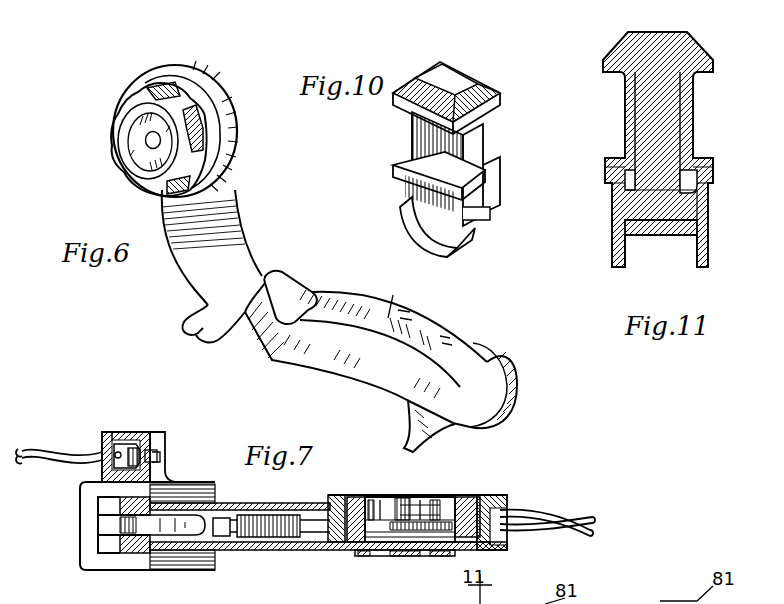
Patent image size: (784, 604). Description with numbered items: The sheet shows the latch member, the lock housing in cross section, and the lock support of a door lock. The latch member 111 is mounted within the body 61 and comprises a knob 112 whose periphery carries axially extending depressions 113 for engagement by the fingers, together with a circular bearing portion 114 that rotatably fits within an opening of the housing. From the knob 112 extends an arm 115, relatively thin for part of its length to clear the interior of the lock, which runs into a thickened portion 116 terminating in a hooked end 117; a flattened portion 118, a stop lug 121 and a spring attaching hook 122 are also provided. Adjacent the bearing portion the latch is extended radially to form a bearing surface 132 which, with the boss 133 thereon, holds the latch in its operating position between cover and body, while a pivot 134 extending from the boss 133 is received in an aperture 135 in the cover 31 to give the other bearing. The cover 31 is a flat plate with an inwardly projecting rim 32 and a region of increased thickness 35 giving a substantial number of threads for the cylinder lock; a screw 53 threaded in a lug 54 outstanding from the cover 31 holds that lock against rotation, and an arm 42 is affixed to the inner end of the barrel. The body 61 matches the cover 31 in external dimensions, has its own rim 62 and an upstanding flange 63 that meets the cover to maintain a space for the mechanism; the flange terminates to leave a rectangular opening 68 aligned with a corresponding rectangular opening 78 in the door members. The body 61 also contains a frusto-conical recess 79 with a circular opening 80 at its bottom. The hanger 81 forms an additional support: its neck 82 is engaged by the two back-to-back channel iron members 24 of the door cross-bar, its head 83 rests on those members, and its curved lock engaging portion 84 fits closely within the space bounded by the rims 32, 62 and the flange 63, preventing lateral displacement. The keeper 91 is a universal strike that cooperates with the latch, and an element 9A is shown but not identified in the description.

In FIG. 6, the axially extending depressions 113 is at (128, 118).
In FIG. 7, the axially extending depressions 113 is at (438, 520).
In FIG. 6, the circular bearing portion 114 is at (200, 118).
In FIG. 7, the circular bearing portion 114 is at (420, 505).
In FIG. 6, the bearing surface 132 is at (226, 134).
In FIG. 6, the knob 112 is at (126, 180).
In FIG. 7, the knob 112 is at (405, 500).
In FIG. 6, the arm 115 is at (240, 208).
In FIG. 6, the latch member 111 is at (276, 236).
In FIG. 6, the thickened portion 116 is at (353, 312).
In FIG. 6, the flattened portion 118 is at (428, 355).
In FIG. 6, the hooked end 117 is at (480, 383).
In FIG. 6, the spring attaching hook 122 is at (206, 346).
In FIG. 6, the stop lug 121 is at (410, 422).
In FIG. 10, the head 83 is at (470, 100).
In FIG. 11, the head 83 is at (618, 54).
In FIG. 10, the neck 82 is at (475, 150).
In FIG. 11, the neck 82 is at (672, 138).
In FIG. 10, the hanger 81 is at (516, 186).
In FIG. 10, the lock engaging portion 84 is at (452, 248).
In FIG. 11, the lock engaging portion 84 is at (640, 204).
In FIG. 11, the channel iron members 24 is at (627, 112).
In FIG. 11, the rim 62 is at (700, 188).
In FIG. 7, the rim 62 is at (510, 512).
In FIG. 11, the body 61 is at (712, 205).
In FIG. 7, the body 61 is at (496, 499).
In FIG. 11, the rim 32 is at (624, 184).
In FIG. 7, the rim 32 is at (508, 544).
In FIG. 11, the flange 63 is at (668, 228).
In FIG. 7, the flange 63 is at (515, 524).
In FIG. 11, the cover 31 is at (614, 250).
In FIG. 7, the cover 31 is at (496, 554).
In FIG. 7, the keeper 91 is at (90, 498).
In FIG. 7, the terminal block 9A is at (160, 458).
In FIG. 7, the rectangular opening 68 is at (155, 510).
In FIG. 7, the rectangular opening 78 is at (128, 540).
In FIG. 7, the arm 42 is at (255, 503).
In FIG. 7, the increased thickness 35 is at (263, 550).
In FIG. 7, the lug 54 is at (337, 496).
In FIG. 7, the screw 53 is at (357, 497).
In FIG. 7, the circular opening 80 is at (410, 497).
In FIG. 7, the frusto-conical recess 79 is at (466, 497).
In FIG. 7, the aperture 135 is at (375, 557).
In FIG. 7, the pivot 134 is at (408, 557).
In FIG. 7, the boss 133 is at (442, 557).